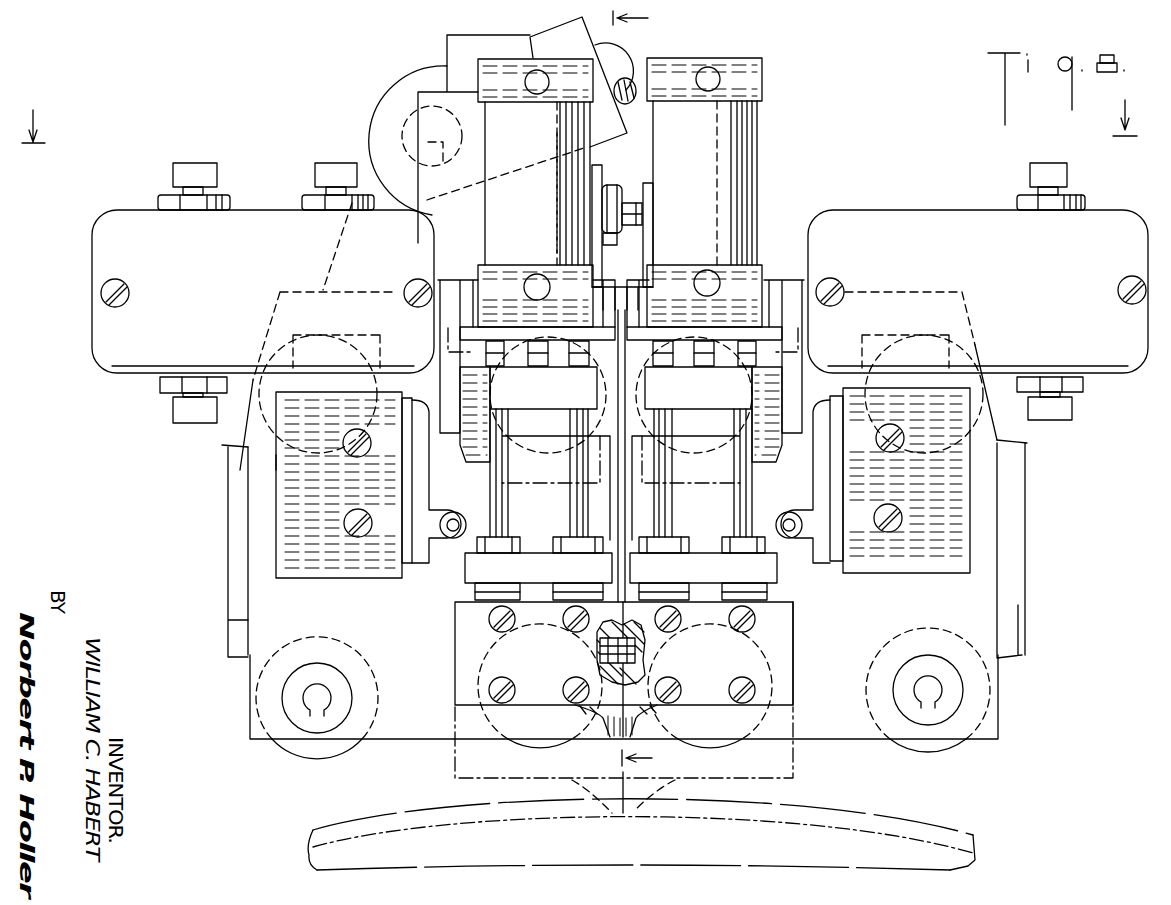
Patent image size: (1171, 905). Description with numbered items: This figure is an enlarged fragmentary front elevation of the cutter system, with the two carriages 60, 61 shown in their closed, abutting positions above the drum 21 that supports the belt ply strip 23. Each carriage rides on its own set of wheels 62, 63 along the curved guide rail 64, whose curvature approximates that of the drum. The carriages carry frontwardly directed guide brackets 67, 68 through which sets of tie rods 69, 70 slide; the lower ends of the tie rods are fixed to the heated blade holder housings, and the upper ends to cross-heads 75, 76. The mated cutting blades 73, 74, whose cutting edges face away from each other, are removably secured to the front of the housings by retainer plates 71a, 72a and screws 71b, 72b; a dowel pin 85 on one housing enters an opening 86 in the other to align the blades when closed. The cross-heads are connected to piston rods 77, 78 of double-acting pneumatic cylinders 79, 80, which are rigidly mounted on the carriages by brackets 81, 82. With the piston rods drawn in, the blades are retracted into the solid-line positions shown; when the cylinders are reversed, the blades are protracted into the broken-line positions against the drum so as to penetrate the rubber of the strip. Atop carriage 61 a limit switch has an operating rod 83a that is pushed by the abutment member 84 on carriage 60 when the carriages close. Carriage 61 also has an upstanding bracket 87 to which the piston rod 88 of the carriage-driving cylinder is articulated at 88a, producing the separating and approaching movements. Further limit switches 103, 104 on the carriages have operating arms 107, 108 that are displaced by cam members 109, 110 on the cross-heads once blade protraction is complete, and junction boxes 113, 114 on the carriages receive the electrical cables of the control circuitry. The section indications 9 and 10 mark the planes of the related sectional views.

The section line 9- 9 is at (623, 410).
The view arrows 10 is at (579, 135).
The drum 21 is at (963, 867).
The belt ply strip 23 is at (912, 784).
The carriage 60 is at (987, 550).
The carriage 61 is at (252, 567).
The wheels 62 is at (962, 428).
The wheels 63 is at (533, 745).
The guide rail 64 is at (233, 510).
The guide bracket 67 is at (788, 574).
The guide bracket 68 is at (467, 583).
The tie rods 69 is at (740, 517).
The tie rods 70 is at (572, 501).
The retainer plate 71a is at (787, 637).
The screws 71b is at (752, 688).
The retainer plate 72a is at (467, 643).
The screws 72b is at (493, 686).
The cutting blade 73 is at (678, 737).
The cutting blade 74 is at (600, 732).
The cross-head 75 is at (716, 397).
The cross-head 76 is at (558, 397).
The piston rod 77 is at (710, 350).
The piston rod 78 is at (537, 348).
The pneumatic cylinder 79 is at (750, 113).
The pneumatic cylinder 80 is at (497, 235).
The bracket 81 is at (767, 330).
The bracket 82 is at (497, 335).
The operating rod 83a is at (630, 228).
The abutment member 84 is at (645, 182).
The dowel pin 85 is at (643, 650).
The opening 86 is at (600, 670).
The bracket 87 is at (368, 158).
The piston rod 88 is at (608, 55).
The articulation 88a is at (413, 123).
The limit switch 103 is at (957, 503).
The limit switch 104 is at (276, 463).
The operating arm 107 is at (800, 532).
The operating arm 108 is at (453, 540).
The cam member 109 is at (815, 440).
The cam member 110 is at (470, 452).
The junction box 113 is at (953, 218).
The junction box 114 is at (254, 218).